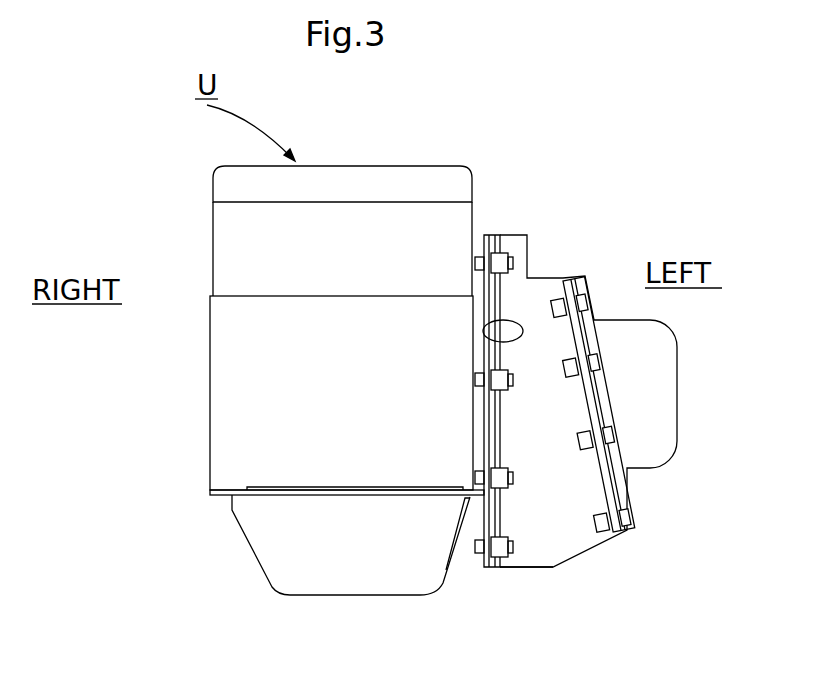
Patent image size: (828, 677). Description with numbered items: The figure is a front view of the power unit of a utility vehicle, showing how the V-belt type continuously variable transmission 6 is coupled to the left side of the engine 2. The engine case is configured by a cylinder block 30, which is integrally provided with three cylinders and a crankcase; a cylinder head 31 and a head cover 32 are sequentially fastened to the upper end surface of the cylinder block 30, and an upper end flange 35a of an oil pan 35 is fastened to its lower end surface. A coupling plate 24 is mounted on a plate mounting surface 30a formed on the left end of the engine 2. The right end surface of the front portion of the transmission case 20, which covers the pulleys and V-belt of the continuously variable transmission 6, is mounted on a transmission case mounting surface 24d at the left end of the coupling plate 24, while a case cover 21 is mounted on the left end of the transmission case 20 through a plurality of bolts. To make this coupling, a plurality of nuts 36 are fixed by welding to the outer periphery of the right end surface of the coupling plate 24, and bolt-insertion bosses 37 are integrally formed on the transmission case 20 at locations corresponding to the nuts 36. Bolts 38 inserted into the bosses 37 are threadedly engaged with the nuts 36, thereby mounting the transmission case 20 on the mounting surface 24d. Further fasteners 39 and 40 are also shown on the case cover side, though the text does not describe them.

The engine 2 is at (203, 412).
The V-belt type continuously variable transmission 6 is at (553, 265).
The transmission case 20 is at (573, 517).
The case cover 21 is at (632, 453).
The coupling plate 24 is at (484, 418).
The transmission case mounting surface 24d is at (553, 568).
The cylinder block 30 is at (257, 358).
The plate mounting surface 30a is at (480, 325).
The cylinder head 31 is at (277, 265).
The head cover 32 is at (238, 190).
The oil pan 35 is at (323, 565).
The upper end flange 35a is at (446, 570).
The nut 36 is at (478, 263).
The bolt-insertion boss 37 is at (499, 257).
The bolt 38 is at (512, 261).
The bolt 39 is at (578, 442).
The nut 40 is at (612, 435).